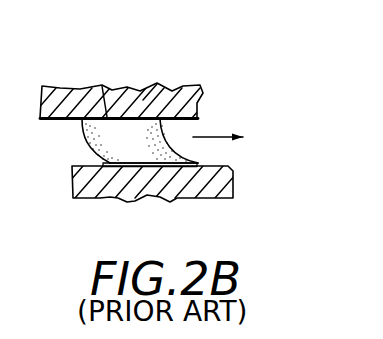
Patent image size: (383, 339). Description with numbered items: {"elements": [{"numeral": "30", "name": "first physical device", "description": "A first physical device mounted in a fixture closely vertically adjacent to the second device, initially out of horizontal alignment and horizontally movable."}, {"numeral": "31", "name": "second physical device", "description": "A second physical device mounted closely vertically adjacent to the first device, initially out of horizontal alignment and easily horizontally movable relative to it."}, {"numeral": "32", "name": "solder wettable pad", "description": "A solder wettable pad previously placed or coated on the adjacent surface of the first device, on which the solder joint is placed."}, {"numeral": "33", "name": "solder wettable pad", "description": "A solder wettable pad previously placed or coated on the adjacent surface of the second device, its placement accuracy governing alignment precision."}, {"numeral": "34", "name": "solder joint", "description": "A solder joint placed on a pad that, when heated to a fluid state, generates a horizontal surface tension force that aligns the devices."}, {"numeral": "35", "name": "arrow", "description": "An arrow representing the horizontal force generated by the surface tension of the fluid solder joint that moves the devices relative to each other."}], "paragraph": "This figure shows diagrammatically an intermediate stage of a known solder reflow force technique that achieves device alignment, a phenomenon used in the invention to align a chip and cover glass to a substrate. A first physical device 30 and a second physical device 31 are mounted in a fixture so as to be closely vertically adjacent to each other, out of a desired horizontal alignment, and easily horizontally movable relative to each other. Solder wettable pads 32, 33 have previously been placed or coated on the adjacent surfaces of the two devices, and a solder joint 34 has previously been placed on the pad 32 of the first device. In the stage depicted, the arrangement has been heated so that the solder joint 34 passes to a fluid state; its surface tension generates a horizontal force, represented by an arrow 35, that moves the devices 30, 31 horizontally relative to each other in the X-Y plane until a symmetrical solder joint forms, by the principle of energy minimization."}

The semiconductor chip 30 is at (157, 84).
The substrate 31 is at (233, 172).
The chip bond pad 32 is at (102, 86).
The substrate bond pad 33 is at (125, 185).
The solder bump 34 is at (105, 138).
The shear displacement direction 35 is at (212, 136).